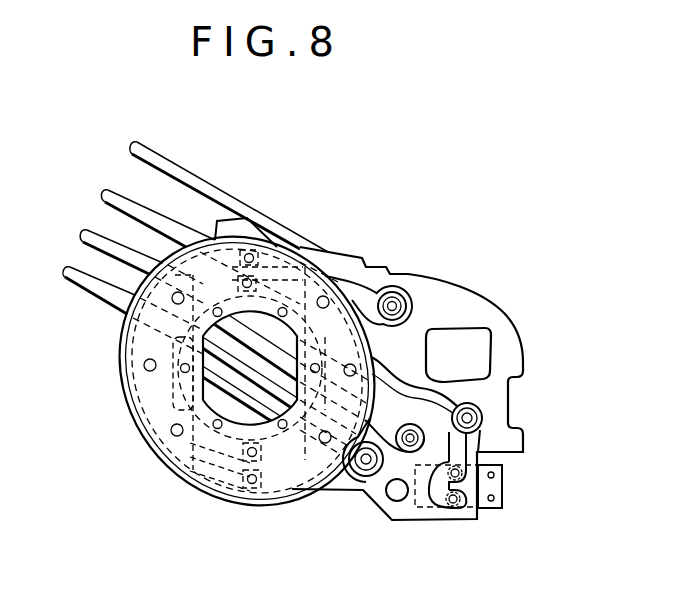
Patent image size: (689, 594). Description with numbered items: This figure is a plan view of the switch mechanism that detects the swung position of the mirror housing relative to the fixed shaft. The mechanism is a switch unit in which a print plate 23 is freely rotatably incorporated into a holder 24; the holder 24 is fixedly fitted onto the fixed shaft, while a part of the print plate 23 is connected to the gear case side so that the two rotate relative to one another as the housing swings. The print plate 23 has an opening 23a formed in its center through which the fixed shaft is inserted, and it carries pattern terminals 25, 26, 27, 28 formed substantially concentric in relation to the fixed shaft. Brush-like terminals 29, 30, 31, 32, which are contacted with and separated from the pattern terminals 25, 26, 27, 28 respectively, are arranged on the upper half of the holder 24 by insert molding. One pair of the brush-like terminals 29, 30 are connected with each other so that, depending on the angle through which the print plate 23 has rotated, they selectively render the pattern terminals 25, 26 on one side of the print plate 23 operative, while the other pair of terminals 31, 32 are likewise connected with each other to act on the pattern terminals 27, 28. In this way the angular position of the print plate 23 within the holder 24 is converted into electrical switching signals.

The print plate 23 is at (463, 300).
The opening 23a is at (488, 338).
The holder 24 is at (280, 248).
The pattern terminal 25 is at (392, 292).
The pattern terminal 26 is at (398, 368).
The pattern terminal 27 is at (423, 482).
The pattern terminal 28 is at (340, 475).
The brush-like terminal 29 is at (247, 218).
The brush-like terminal 30 is at (213, 232).
The brush-like terminal 31 is at (212, 495).
The brush-like terminal 32 is at (243, 493).